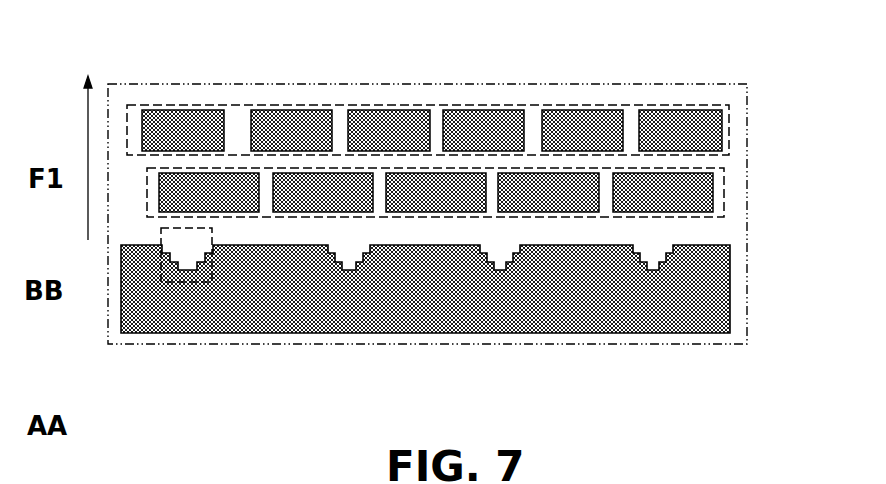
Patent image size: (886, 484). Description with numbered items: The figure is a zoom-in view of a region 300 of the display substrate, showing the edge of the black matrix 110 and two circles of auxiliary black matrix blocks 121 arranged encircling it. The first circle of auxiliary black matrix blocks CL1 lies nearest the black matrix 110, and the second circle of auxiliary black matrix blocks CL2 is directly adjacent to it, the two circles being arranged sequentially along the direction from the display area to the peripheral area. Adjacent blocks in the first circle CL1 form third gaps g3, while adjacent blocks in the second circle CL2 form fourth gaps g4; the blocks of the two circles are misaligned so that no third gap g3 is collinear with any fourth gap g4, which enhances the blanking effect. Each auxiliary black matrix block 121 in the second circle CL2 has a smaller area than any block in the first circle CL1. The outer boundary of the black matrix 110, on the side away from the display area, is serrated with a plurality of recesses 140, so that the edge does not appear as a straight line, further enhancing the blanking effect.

The region 300 is at (237, 84).
The auxiliary black matrix blocks 121 is at (580, 133).
The second circle of auxiliary black matrix blocks CL2 is at (491, 97).
The first circle of auxiliary black matrix blocks CL1 is at (724, 193).
The fourth gaps g4 is at (340, 135).
The third gaps g3 is at (379, 198).
The black matrix 110 is at (452, 305).
The recesses 140 is at (207, 282).